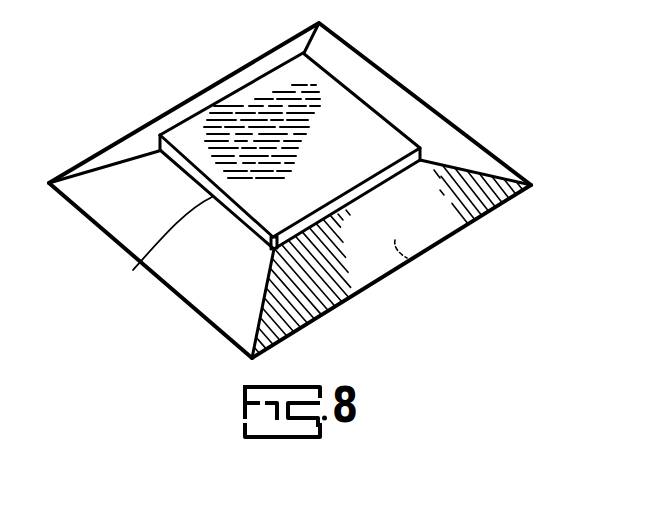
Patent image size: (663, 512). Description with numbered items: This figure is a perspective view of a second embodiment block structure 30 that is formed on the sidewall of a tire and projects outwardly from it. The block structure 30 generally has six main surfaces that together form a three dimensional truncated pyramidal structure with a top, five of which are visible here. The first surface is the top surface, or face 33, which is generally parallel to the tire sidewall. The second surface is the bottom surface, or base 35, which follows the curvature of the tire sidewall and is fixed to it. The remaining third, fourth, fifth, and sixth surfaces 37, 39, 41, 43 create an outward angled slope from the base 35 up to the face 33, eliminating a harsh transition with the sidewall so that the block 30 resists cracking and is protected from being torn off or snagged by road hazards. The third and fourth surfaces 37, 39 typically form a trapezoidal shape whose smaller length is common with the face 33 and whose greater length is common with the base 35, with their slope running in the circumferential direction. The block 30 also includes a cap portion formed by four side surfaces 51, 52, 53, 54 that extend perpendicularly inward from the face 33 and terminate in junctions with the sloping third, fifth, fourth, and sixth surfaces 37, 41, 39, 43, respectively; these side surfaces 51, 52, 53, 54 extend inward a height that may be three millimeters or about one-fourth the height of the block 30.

The block structure 30 is at (413, 47).
The face 33 is at (273, 130).
The base 35 is at (413, 259).
The third surface 37 is at (437, 212).
The fourth surface 39 is at (152, 129).
The fifth surface 41 is at (459, 147).
The sixth surface 43 is at (188, 272).
The side surface 51 is at (357, 195).
The side surface 52 is at (386, 115).
The side surface 53 is at (213, 100).
The side surface 54 is at (156, 248).